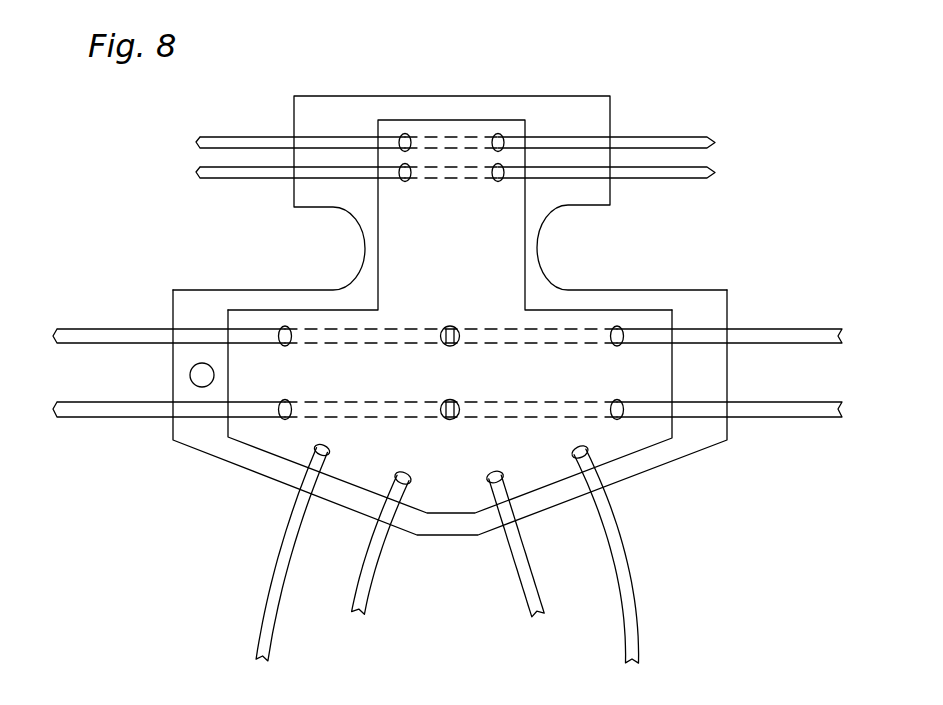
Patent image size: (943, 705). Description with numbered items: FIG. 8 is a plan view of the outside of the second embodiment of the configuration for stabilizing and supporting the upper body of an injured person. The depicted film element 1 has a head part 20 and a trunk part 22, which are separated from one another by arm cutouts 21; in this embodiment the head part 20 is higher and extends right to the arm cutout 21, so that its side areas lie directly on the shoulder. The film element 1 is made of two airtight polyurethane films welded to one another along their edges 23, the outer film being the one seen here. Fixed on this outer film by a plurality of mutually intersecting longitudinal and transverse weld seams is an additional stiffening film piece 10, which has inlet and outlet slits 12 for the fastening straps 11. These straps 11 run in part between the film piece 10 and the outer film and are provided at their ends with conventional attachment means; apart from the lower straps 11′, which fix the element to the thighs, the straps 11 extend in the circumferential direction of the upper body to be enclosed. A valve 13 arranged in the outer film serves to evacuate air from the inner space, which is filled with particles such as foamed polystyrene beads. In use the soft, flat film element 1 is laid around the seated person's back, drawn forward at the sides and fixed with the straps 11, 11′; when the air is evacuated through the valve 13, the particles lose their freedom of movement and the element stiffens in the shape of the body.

The film element 1 is at (730, 470).
The stiffening film piece 10 is at (627, 443).
The fastening straps 11 is at (232, 170).
The lower straps 11′ is at (266, 633).
The inlet and outlet slits 12 is at (498, 137).
The valve 13 is at (188, 375).
The head part 20 is at (562, 122).
The arm cutouts 21 is at (558, 242).
The trunk part 22 is at (697, 310).
The edges 23 is at (365, 245).